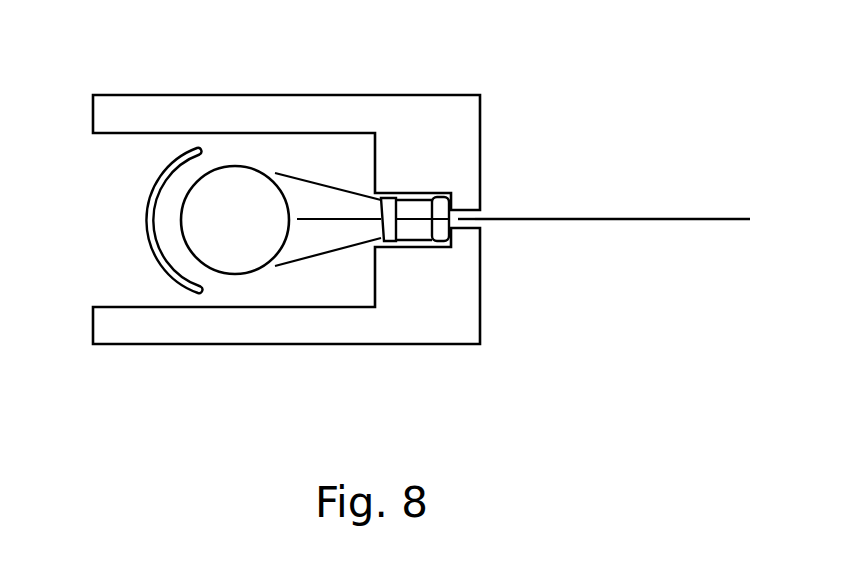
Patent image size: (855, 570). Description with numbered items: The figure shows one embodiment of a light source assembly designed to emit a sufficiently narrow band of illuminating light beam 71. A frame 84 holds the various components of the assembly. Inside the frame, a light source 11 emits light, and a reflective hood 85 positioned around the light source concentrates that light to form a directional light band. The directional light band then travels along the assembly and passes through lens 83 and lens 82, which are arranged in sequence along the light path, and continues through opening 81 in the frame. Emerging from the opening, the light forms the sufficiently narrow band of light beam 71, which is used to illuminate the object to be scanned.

The light source 11 is at (235, 167).
The illuminating light beam 71 is at (641, 218).
The opening 81 is at (485, 212).
The lens 82 is at (447, 213).
The lens 83 is at (388, 207).
The frame 84 is at (289, 105).
The reflective hood 85 is at (155, 188).